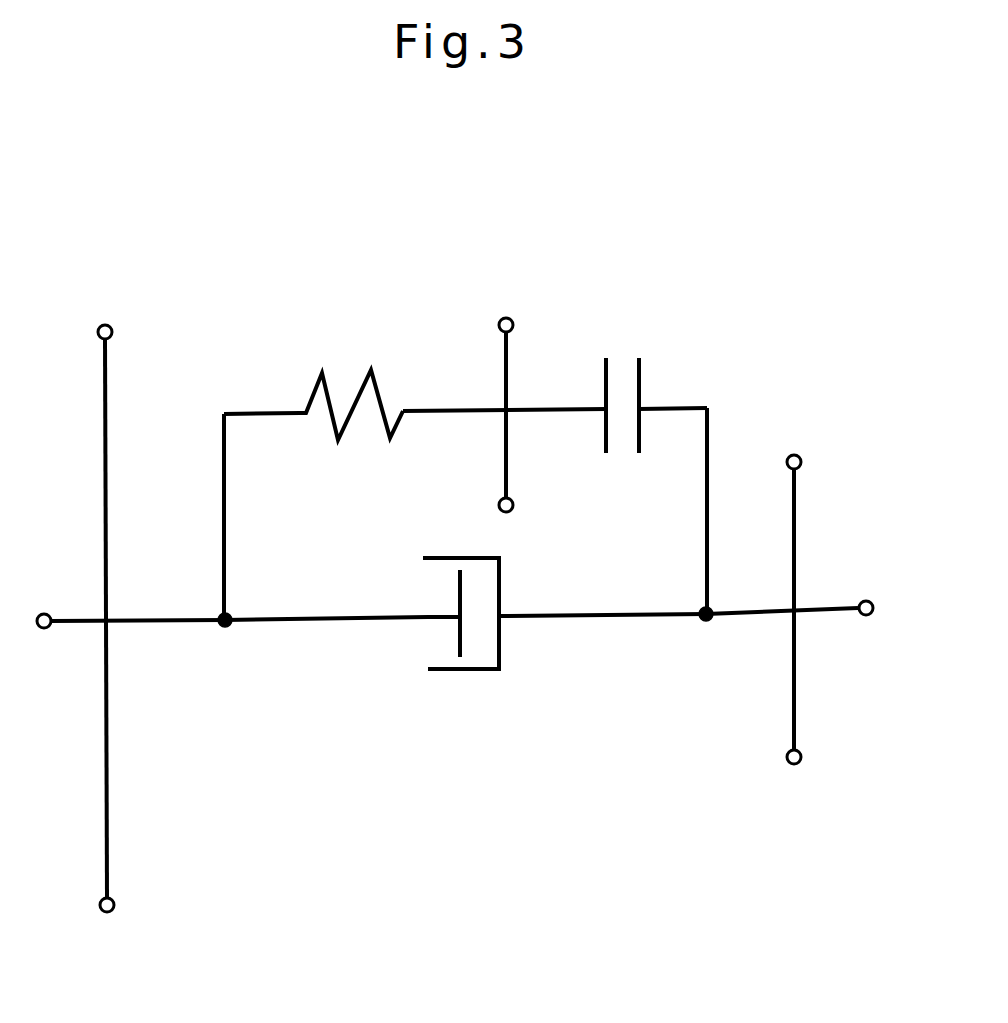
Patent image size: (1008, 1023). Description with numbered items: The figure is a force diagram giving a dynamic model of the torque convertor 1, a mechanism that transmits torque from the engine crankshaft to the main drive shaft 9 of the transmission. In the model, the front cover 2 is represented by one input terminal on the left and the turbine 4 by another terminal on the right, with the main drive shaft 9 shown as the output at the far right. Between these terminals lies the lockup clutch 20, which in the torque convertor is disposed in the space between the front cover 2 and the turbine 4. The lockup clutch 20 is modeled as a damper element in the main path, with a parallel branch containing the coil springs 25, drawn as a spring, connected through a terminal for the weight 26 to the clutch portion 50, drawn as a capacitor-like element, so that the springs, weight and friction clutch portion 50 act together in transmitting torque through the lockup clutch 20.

The torque convertor 1 is at (810, 302).
The front cover 2 is at (110, 913).
The turbine 4 is at (800, 763).
The main drive shaft 9 is at (830, 607).
The lockup clutch 20 is at (444, 311).
The coil springs 25 is at (358, 390).
The weight 26 is at (514, 323).
The clutch portion 50 is at (633, 383).